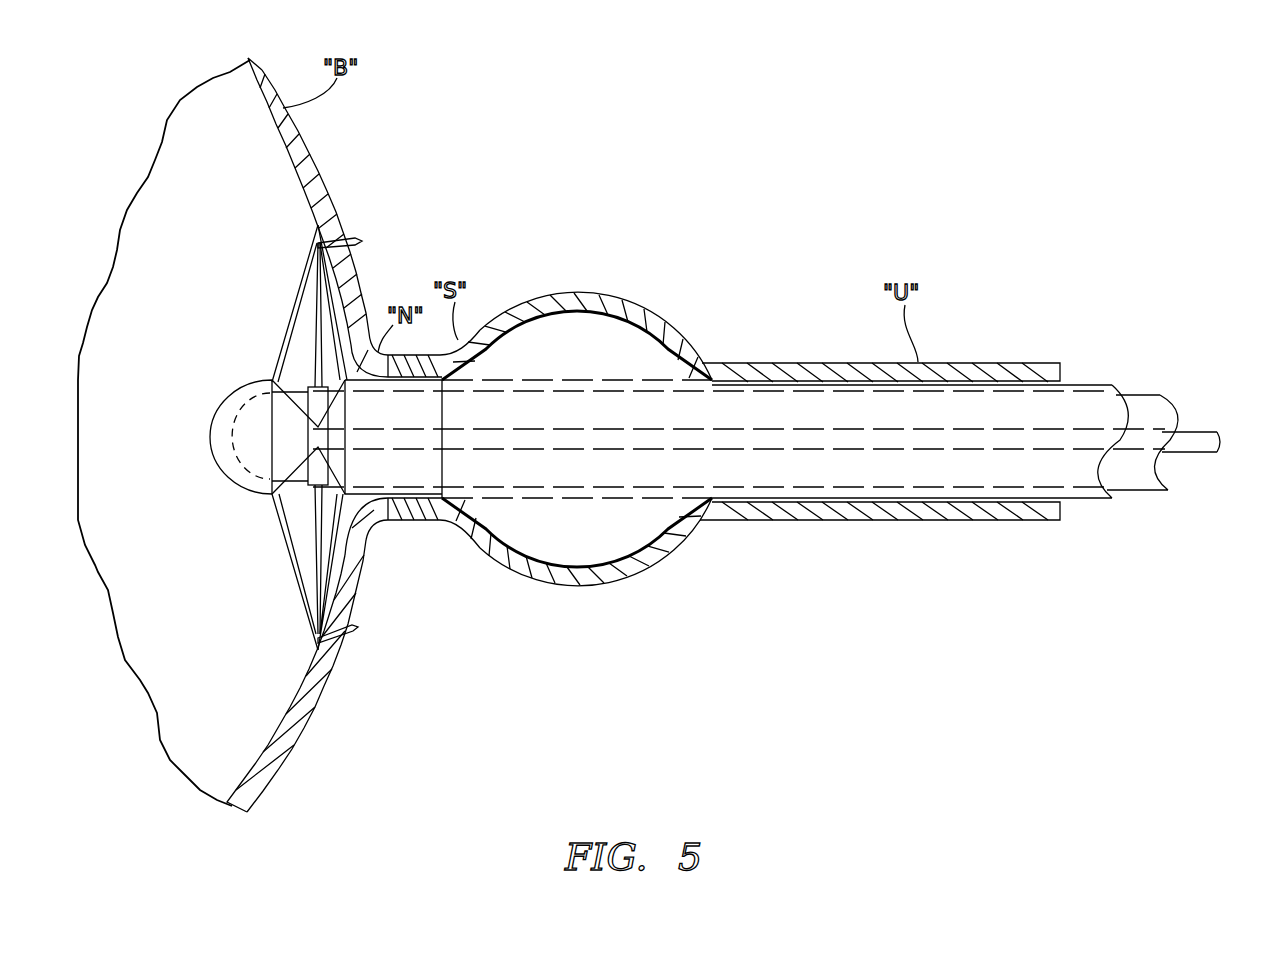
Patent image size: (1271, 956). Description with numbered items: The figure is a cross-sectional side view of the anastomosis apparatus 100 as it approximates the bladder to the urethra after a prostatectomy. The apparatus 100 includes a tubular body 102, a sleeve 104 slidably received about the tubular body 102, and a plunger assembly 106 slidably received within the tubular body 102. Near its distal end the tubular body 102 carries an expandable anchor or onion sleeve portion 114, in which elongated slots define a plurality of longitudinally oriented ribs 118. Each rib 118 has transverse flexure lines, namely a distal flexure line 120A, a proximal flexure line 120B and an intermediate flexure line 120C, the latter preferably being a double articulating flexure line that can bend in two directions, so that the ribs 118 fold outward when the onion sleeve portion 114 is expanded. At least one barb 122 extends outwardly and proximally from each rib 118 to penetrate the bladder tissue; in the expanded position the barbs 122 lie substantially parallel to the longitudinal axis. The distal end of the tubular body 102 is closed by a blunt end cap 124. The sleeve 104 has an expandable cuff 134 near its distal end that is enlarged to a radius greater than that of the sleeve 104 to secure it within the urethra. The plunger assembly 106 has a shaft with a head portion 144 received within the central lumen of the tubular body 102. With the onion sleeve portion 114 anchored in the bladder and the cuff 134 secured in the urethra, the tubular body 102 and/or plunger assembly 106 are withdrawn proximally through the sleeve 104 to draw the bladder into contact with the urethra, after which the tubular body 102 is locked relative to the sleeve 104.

The apparatus 100 is at (558, 124).
The tubular body 102 is at (1140, 393).
The sleeve 104 is at (1088, 383).
The plunger assembly 106 is at (1200, 433).
The onion sleeve portion 114 is at (270, 555).
The rib 118 is at (297, 312).
The distal flexure line 120A is at (272, 380).
The proximal flexure line 120B is at (332, 377).
The intermediate flexure line 120C is at (327, 217).
The barb 122 is at (357, 240).
The blunt end cap 124 is at (208, 458).
The expandable cuff 134 is at (670, 358).
The head portion 144 is at (248, 447).